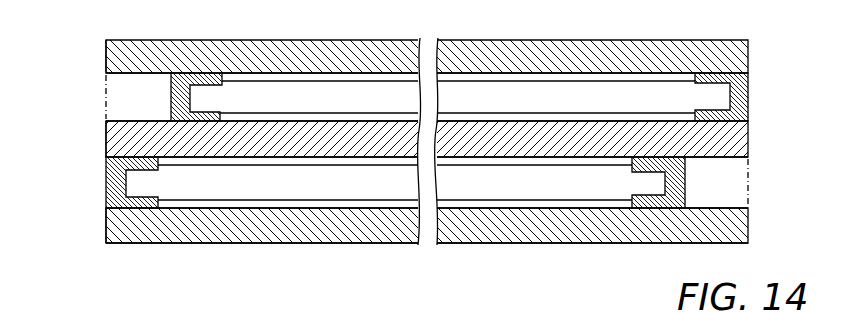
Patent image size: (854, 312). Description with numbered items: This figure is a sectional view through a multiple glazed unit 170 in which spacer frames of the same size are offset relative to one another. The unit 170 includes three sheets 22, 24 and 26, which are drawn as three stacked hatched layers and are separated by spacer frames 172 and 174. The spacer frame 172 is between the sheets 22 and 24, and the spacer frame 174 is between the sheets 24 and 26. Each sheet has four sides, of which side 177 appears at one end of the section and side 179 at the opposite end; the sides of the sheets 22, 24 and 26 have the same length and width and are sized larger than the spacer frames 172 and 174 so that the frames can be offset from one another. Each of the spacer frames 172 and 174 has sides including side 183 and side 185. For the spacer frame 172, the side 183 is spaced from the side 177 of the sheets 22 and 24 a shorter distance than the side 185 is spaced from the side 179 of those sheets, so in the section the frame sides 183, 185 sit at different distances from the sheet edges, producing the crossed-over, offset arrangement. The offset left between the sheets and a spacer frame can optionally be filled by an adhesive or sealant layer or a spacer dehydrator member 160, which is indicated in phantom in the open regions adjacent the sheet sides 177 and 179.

The multiple glazed unit 170 is at (429, 161).
The sheet 26 is at (748, 42).
The sheet 24 is at (748, 132).
The sheet 22 is at (747, 222).
The side of sheet 179 is at (748, 58).
The spacer frame 174 is at (748, 106).
The spacer frame 172 is at (105, 200).
The side of sheet 177 is at (113, 58).
The side of spacer frame 183 is at (172, 108).
The side of spacer frame 185 is at (748, 88).
The spacer dehydrator member 160 is at (125, 98).